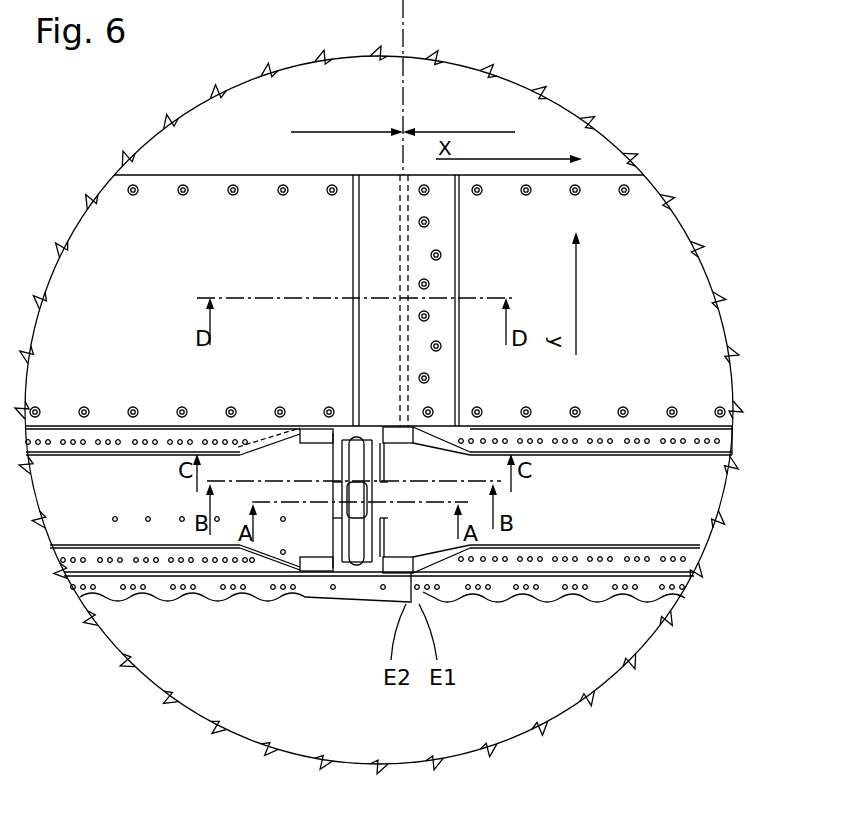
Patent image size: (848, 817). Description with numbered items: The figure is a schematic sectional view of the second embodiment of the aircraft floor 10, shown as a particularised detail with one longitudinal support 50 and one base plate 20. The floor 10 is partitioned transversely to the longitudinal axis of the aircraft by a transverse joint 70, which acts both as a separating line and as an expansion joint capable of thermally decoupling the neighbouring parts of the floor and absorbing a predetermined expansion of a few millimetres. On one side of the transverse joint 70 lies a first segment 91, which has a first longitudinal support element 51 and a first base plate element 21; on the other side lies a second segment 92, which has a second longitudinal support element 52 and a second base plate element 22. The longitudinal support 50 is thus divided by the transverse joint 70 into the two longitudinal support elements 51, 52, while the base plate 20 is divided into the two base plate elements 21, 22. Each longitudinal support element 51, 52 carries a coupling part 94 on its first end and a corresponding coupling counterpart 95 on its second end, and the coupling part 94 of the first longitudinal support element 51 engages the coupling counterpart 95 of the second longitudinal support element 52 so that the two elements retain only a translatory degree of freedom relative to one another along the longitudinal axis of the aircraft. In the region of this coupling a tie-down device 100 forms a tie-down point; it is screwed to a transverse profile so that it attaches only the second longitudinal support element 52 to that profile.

The aircraft floor 10 is at (684, 134).
The base plate 20 is at (708, 270).
The first base plate element 21 is at (206, 187).
The second base plate element 22 is at (601, 185).
The longitudinal support 50 is at (710, 487).
The first longitudinal support element 51 is at (530, 603).
The second longitudinal support element 52 is at (257, 601).
The transverse joint 70 is at (412, 604).
The first segment 91 is at (513, 129).
The second segment 92 is at (318, 129).
The coupling part 94 is at (386, 507).
The coupling counterpart 95 is at (383, 568).
The tie-down device 100 is at (350, 508).